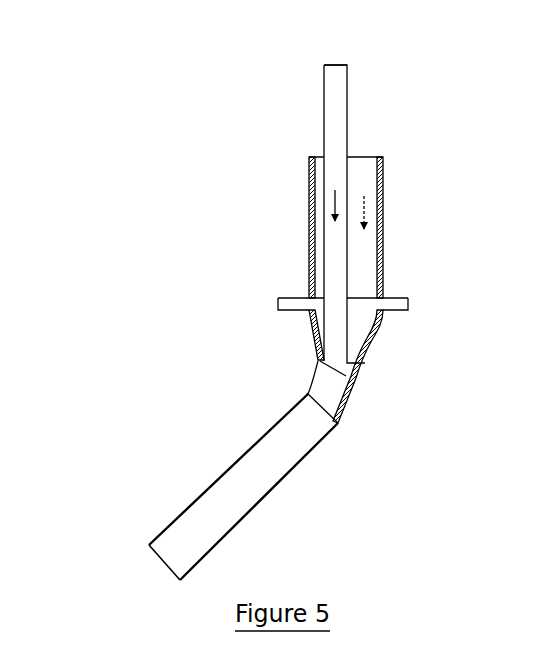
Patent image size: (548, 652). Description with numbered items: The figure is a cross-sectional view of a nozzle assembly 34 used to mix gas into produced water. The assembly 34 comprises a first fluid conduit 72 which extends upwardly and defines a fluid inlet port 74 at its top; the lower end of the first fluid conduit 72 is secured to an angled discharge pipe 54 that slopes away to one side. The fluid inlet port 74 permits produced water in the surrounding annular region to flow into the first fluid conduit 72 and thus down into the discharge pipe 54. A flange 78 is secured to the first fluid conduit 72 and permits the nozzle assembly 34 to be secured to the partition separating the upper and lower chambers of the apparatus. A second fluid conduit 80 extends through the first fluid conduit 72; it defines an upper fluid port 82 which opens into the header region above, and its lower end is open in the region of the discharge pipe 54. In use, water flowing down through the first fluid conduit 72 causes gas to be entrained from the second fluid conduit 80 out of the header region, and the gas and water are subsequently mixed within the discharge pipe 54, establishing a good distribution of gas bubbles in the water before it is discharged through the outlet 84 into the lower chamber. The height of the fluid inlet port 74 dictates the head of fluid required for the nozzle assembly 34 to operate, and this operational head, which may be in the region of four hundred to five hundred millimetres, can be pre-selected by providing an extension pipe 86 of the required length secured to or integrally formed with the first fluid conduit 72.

The nozzle assembly 34 is at (131, 149).
The angled discharge pipe 54 is at (255, 505).
The first fluid conduit 72 is at (374, 333).
The fluid inlet port 74 is at (365, 156).
The flange 78 is at (408, 305).
The second fluid conduit 80 is at (347, 105).
The upper fluid port 82 is at (339, 65).
The outlet 84 is at (163, 572).
The extension pipe 86 is at (383, 226).